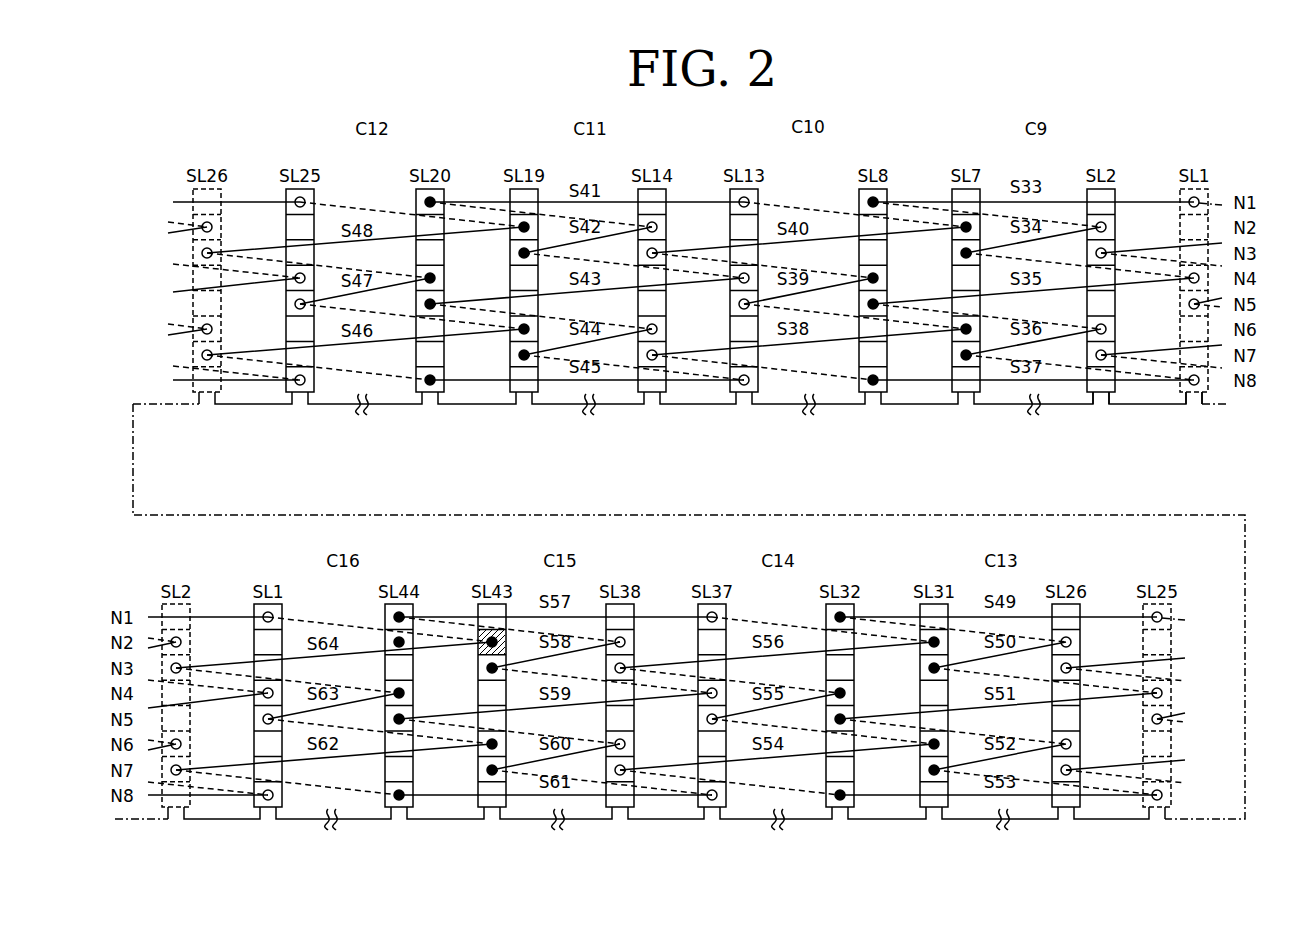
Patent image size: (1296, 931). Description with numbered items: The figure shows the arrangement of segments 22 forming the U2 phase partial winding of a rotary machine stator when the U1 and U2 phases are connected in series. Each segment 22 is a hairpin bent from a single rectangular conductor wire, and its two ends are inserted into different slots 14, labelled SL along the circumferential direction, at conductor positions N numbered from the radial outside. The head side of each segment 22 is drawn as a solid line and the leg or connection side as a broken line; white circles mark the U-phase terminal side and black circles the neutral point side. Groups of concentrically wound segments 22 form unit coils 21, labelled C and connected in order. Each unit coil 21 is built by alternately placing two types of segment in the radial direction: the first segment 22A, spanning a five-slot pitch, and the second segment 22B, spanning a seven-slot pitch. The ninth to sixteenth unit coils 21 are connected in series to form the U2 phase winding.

The slot 14 is at (1098, 405).
The unit coil 21 is at (822, 355).
The segment 22 is at (1067, 259).
The first segment 22A is at (997, 240).
The second segment 22B is at (1150, 200).